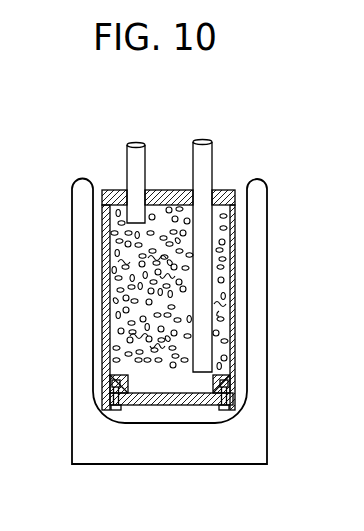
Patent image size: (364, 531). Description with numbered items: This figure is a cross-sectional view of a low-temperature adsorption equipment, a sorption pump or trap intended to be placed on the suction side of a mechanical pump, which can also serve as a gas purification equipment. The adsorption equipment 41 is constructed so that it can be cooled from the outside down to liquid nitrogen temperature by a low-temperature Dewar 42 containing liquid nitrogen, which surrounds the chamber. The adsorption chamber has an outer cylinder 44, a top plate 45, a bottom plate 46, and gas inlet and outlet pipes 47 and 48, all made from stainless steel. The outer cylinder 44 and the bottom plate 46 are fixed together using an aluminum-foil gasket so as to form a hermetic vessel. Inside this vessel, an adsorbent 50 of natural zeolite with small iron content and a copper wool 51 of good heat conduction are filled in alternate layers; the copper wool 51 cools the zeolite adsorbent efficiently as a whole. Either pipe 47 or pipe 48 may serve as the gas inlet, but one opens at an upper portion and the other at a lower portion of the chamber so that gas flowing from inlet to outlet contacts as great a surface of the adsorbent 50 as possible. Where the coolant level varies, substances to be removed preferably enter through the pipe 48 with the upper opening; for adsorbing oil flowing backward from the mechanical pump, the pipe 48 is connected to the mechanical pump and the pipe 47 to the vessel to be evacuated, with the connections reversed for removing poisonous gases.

The adsorption equipment 41 is at (232, 190).
The low-temperature Dewar 42 is at (258, 222).
The outer cylinder 44 is at (235, 275).
The top plate 45 is at (173, 200).
The bottom plate 46 is at (148, 393).
The gas pipe 47 is at (203, 170).
The gas pipe 48 is at (132, 170).
The adsorbent 50 is at (105, 198).
The copper wool 51 is at (107, 268).